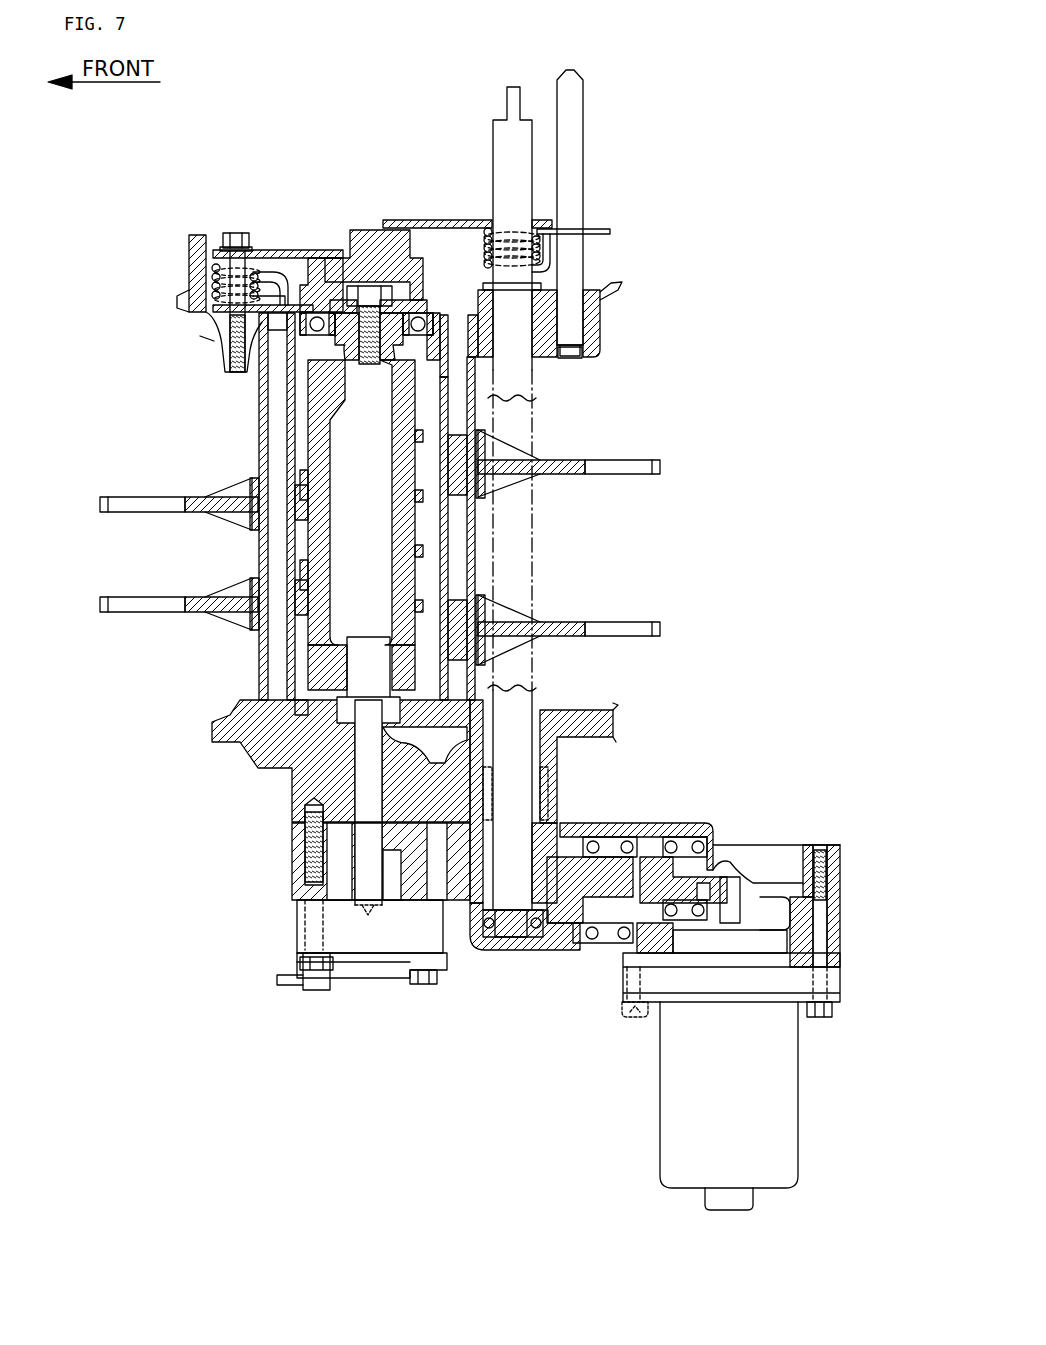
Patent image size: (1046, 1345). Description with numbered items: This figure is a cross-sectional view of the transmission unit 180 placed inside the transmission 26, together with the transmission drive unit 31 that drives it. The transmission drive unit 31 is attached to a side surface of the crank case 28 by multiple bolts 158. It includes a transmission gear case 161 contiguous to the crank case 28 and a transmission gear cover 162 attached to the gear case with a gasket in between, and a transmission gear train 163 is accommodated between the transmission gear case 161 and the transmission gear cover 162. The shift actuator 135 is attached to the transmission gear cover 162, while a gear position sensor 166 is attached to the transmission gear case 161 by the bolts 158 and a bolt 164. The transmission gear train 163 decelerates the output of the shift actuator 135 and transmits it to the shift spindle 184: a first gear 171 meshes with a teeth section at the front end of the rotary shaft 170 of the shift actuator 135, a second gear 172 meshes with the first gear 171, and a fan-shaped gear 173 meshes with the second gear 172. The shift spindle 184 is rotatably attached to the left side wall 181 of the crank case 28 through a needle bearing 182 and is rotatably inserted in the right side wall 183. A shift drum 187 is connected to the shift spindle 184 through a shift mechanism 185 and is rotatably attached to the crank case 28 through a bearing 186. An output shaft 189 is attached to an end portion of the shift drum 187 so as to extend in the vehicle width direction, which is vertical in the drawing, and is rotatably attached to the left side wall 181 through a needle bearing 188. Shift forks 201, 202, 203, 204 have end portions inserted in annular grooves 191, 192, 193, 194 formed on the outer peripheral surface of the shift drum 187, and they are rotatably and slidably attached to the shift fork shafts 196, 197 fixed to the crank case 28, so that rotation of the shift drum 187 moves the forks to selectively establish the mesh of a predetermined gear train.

The transmission 26 is at (133, 402).
The crank case 28 is at (240, 762).
The transmission drive unit 31 is at (499, 1113).
The shift actuator 135 is at (812, 1145).
The bolts 158 is at (300, 960).
The transmission gear case 161 is at (294, 850).
The transmission gear cover 162 is at (512, 948).
The transmission gear train 163 is at (718, 855).
The bolt 164 is at (426, 990).
The gear position sensor 166 is at (368, 978).
The rotary shaft 170 is at (745, 895).
The first gear 171 is at (683, 838).
The second gear 172 is at (612, 838).
The fan-shaped gear 173 is at (560, 945).
The transmission unit 180 is at (233, 460).
The left side wall 181 is at (290, 778).
The needle bearing 182 is at (547, 780).
The right side wall 183 is at (189, 272).
The shift spindle 184 is at (531, 522).
The shift mechanism 185 is at (375, 217).
The bearing 186 is at (313, 250).
The shift drum 187 is at (470, 374).
The needle bearing 188 is at (305, 707).
The output shaft 189 is at (360, 660).
The annular groove 191 is at (480, 652).
The annular groove 192 is at (305, 590).
The annular groove 193 is at (308, 505).
The annular groove 194 is at (450, 445).
The shift fork shaft 196 is at (470, 567).
The shift fork shaft 197 is at (259, 381).
The shift fork 201 is at (660, 627).
The shift fork 202 is at (100, 600).
The shift fork 203 is at (100, 502).
The shift fork 204 is at (660, 466).